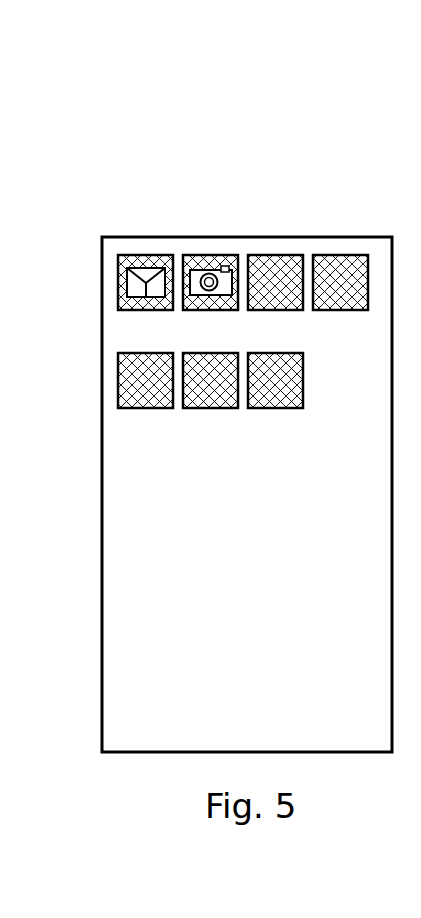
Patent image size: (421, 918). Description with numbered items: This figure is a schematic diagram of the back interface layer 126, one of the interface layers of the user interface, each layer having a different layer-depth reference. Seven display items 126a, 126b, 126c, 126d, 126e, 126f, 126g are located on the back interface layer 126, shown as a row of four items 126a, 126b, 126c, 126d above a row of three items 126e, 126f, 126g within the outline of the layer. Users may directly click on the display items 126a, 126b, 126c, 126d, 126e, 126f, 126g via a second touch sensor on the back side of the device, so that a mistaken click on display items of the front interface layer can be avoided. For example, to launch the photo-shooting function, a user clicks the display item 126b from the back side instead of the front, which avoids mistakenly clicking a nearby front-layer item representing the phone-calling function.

The back interface layer 126 is at (110, 125).
The display item 126a is at (140, 256).
The display item 126b is at (212, 256).
The display item 126c is at (278, 256).
The display item 126d is at (343, 256).
The display item 126e is at (142, 409).
The display item 126f is at (222, 409).
The display item 126g is at (280, 409).